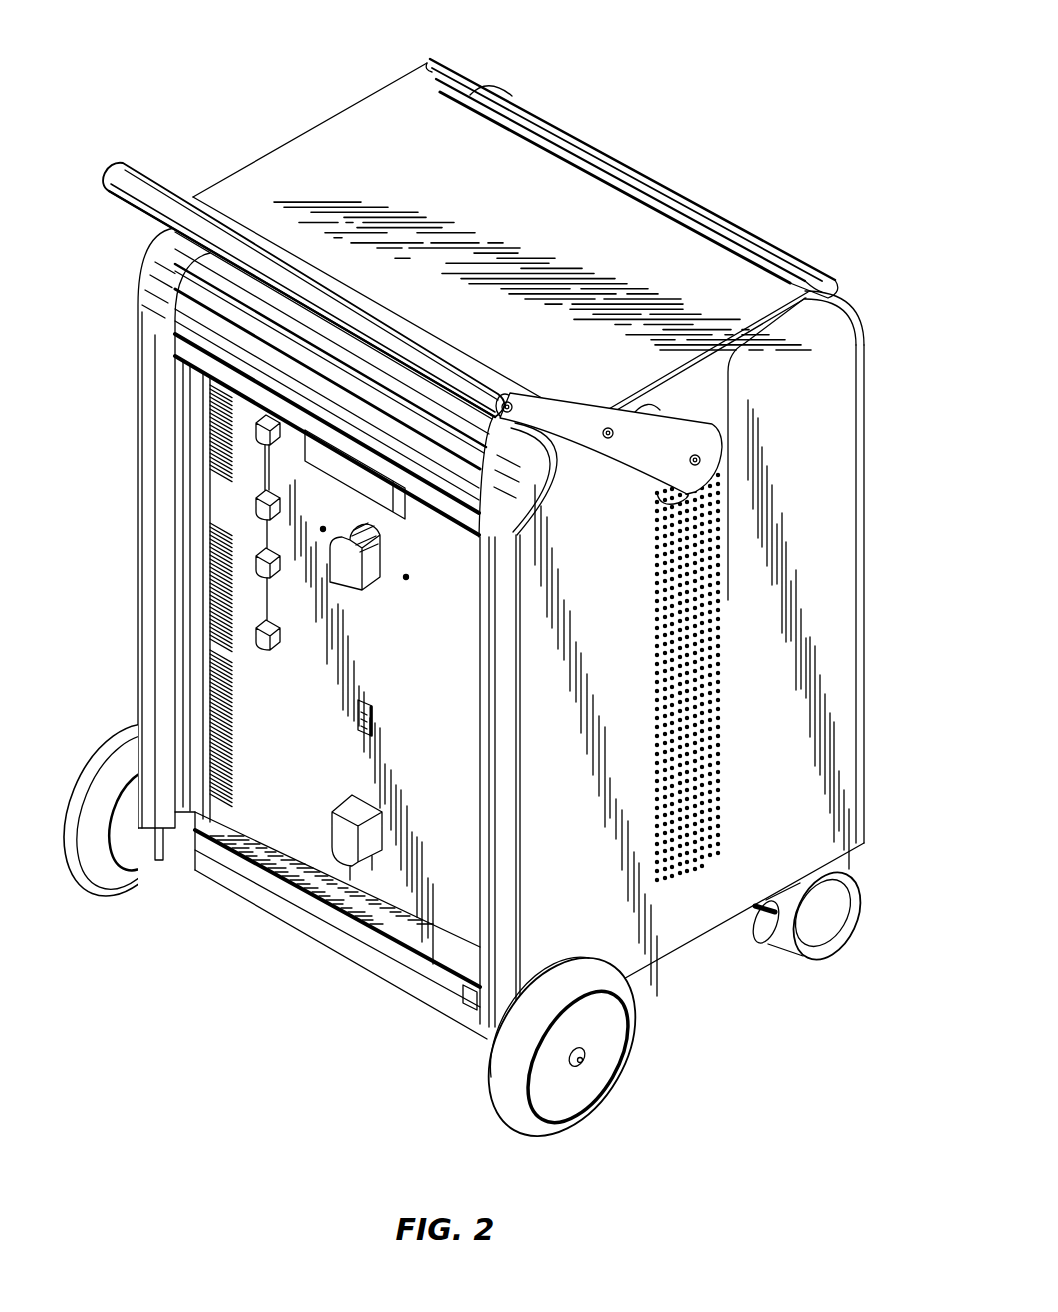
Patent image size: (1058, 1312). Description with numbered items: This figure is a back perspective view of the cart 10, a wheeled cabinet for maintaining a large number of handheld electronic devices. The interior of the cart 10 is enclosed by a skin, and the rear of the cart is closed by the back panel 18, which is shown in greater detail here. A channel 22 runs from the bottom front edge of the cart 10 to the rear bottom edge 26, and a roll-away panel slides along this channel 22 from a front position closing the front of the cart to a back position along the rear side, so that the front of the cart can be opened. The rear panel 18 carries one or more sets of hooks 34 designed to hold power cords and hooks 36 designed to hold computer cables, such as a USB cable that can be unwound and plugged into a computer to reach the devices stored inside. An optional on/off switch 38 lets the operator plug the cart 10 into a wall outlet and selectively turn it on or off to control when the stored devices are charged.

The cart 10 is at (696, 70).
The back panel 18 is at (272, 694).
The channel 22 is at (180, 527).
The rear bottom edge 26 is at (187, 847).
The hooks 34 is at (343, 560).
The hooks 36 is at (268, 646).
The on/off switch 38 is at (373, 722).